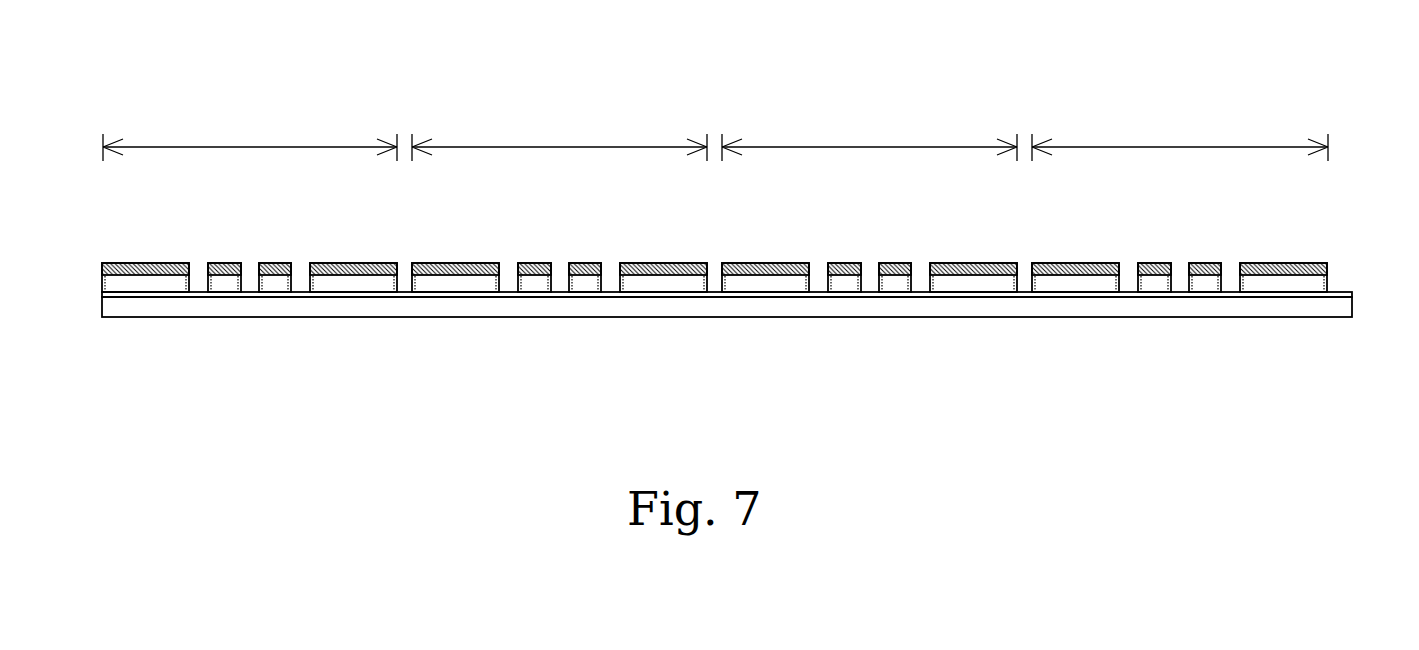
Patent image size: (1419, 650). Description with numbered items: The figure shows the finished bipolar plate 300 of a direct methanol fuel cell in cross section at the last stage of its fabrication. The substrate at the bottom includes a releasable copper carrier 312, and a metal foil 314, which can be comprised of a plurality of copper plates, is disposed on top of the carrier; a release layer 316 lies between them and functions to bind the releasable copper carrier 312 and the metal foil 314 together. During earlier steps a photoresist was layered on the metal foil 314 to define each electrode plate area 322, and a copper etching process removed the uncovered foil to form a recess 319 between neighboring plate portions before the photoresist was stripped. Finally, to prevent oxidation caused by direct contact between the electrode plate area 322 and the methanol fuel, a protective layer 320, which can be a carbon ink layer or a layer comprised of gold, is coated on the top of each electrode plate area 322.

The bipolar plate 300 is at (1028, 50).
The releasable copper carrier 312 is at (1192, 307).
The metal foil 314 is at (715, 249).
The release layer 316 is at (1346, 296).
The recess 319 is at (298, 272).
The protective layer 320 is at (122, 263).
The electrode plate area 322 is at (715, 137).